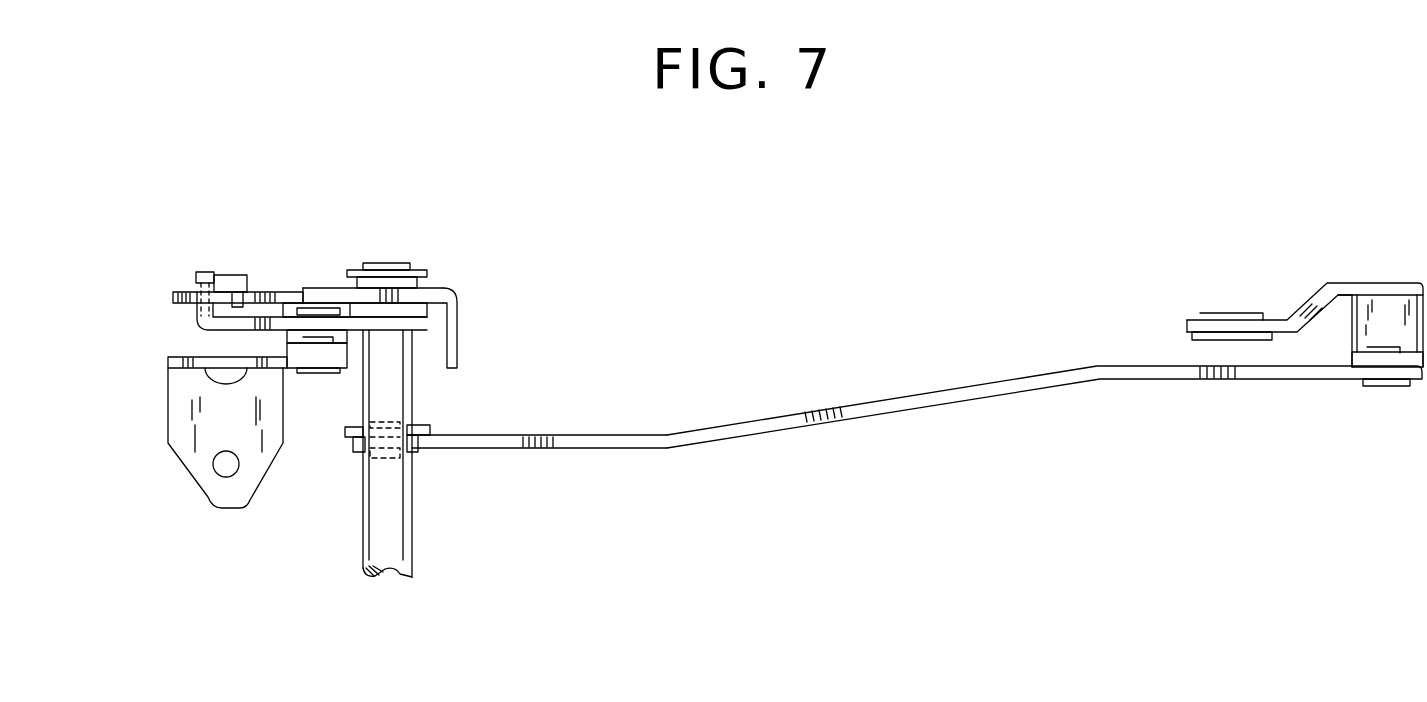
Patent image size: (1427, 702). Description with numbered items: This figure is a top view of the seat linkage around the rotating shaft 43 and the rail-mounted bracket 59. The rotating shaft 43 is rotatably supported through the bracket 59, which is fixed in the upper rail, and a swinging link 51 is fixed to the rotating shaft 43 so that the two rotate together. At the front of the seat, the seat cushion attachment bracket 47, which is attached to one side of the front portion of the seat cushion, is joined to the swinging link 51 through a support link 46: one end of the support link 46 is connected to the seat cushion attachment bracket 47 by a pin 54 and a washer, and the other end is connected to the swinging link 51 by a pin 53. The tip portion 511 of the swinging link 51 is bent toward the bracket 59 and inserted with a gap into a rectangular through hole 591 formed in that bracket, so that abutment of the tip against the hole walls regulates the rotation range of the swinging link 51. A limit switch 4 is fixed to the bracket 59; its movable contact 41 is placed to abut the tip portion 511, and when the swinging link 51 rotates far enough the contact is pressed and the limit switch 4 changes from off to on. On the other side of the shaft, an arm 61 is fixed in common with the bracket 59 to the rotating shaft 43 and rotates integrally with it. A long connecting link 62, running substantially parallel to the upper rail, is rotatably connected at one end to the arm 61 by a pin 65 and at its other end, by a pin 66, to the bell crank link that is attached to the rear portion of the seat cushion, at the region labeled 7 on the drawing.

The limit switch 4 is at (229, 262).
The movable contact 41 is at (195, 275).
The through hole 591 is at (182, 287).
The tip portion 511 is at (207, 318).
The pin 53 is at (320, 310).
The swinging link 51 is at (368, 322).
The support link 46 is at (367, 353).
The bracket 59 is at (453, 353).
The rotating shaft 43 is at (400, 401).
The pin 54 is at (310, 373).
The seat cushion attachment bracket 47 is at (242, 495).
The pin 65 is at (383, 462).
The arm 61 is at (432, 432).
The connecting link 62 is at (952, 400).
The mounting bracket 7 is at (1352, 283).
The pin 66 is at (1397, 386).